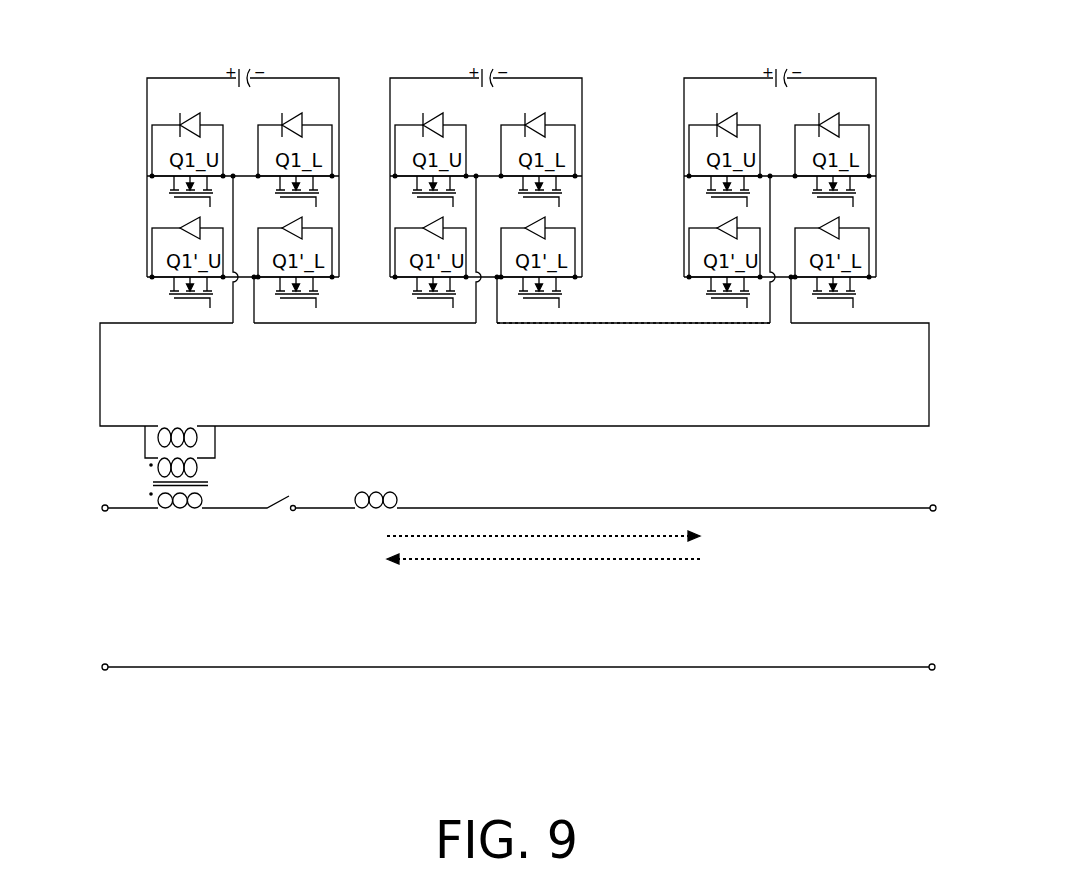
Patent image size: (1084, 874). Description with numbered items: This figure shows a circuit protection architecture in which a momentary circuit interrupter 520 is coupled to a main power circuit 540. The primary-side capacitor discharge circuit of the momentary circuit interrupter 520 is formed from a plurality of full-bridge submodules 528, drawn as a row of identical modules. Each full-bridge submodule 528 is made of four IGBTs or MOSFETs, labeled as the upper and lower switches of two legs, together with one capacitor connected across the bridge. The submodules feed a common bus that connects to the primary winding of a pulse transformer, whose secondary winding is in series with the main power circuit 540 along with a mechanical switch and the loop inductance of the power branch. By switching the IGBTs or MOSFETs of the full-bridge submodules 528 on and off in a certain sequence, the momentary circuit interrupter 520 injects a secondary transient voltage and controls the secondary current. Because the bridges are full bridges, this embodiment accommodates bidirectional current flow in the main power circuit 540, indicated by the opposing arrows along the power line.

The momentary circuit interrupter 520 is at (504, 258).
The full-bridge submodule 528 is at (106, 168).
The main power circuit 540 is at (231, 686).